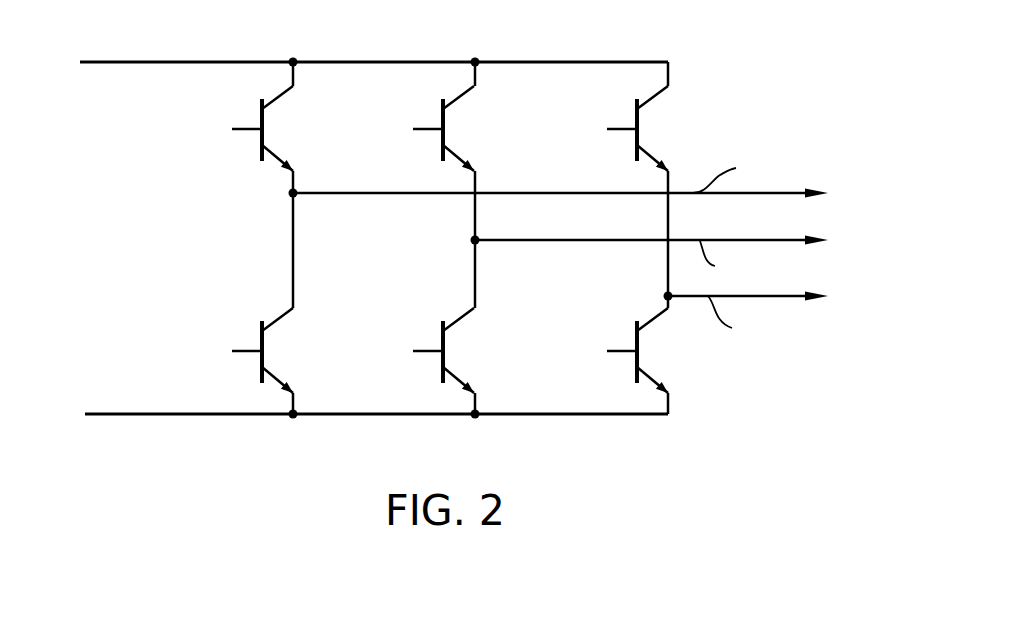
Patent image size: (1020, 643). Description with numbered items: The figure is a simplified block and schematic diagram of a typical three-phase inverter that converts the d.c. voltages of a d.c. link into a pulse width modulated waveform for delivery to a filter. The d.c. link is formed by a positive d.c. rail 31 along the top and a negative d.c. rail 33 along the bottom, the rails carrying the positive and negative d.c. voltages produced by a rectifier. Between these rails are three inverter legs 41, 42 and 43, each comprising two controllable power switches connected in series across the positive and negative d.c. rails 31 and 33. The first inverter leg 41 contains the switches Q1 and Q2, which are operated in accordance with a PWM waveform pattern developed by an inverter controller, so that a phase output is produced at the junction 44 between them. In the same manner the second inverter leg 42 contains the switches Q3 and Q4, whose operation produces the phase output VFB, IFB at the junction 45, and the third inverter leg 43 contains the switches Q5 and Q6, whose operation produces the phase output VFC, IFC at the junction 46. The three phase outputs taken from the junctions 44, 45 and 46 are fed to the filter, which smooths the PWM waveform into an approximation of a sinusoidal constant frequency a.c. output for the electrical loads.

The positive d.c. rail 31 is at (188, 62).
The negative d.c. rail 33 is at (220, 414).
The inverter leg 41 is at (235, 238).
The inverter leg 42 is at (408, 238).
The inverter leg 43 is at (586, 238).
The junction 44 is at (296, 190).
The junction 45 is at (473, 239).
The junction 46 is at (665, 294).
The controllable power switch Q1 is at (262, 117).
The controllable power switch Q2 is at (262, 329).
The controllable power switch Q3 is at (443, 118).
The controllable power switch Q4 is at (443, 337).
The controllable power switch Q5 is at (637, 120).
The controllable power switch Q6 is at (637, 339).